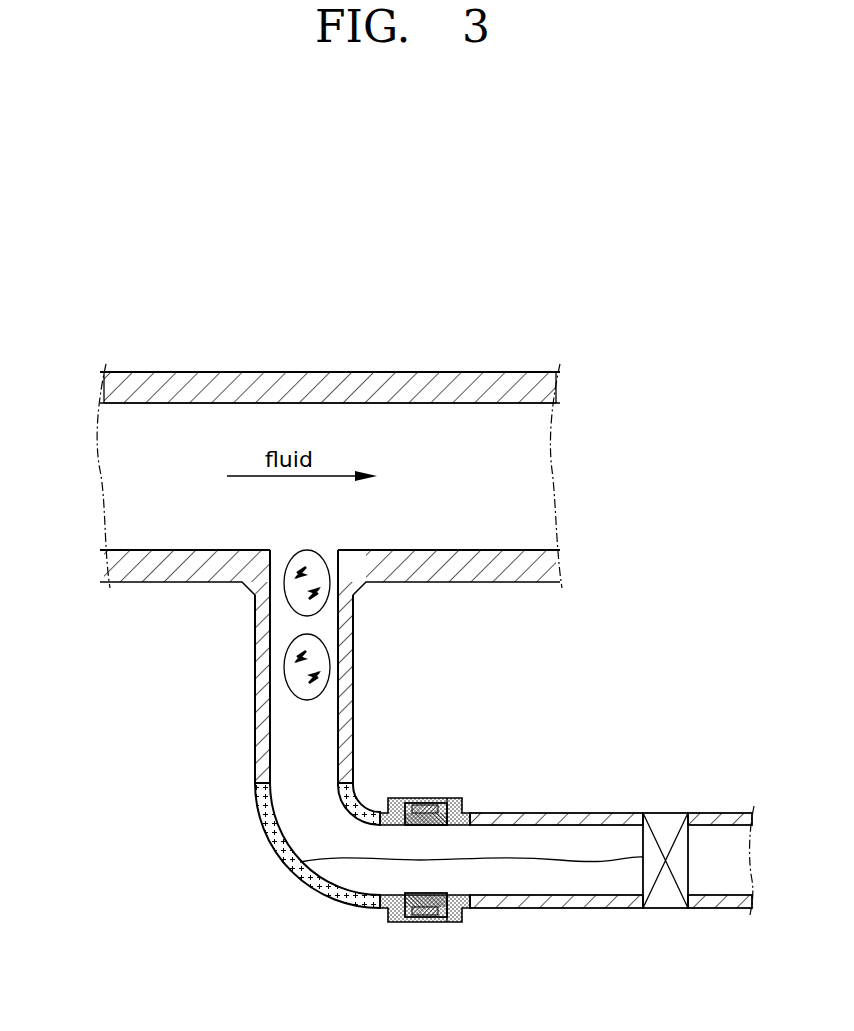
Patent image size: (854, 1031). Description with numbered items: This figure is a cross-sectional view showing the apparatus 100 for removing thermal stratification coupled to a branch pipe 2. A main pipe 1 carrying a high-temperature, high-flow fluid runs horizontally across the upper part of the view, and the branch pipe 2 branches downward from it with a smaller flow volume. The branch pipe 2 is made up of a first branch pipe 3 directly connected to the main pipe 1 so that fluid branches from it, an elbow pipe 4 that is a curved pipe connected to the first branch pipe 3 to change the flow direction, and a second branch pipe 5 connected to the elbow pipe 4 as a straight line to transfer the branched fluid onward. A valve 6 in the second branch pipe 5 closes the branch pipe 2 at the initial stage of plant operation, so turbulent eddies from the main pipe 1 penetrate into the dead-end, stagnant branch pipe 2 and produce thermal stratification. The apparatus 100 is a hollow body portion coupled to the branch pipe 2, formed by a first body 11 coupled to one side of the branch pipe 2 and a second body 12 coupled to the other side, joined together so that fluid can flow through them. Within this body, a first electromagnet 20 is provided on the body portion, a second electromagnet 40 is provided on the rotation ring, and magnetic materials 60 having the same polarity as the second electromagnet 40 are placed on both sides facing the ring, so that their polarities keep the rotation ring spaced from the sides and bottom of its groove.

The main pipe 1 is at (242, 385).
The branch pipe 2 is at (186, 732).
The first branch pipe 3 is at (263, 728).
The elbow pipe 4 is at (260, 818).
The second branch pipe 5 is at (522, 905).
The valve 6 is at (665, 896).
The apparatus for removing thermal stratification 100 is at (464, 774).
The first body 11 is at (400, 798).
The second body 12 is at (460, 806).
The first electromagnet 20 is at (426, 920).
The second electromagnet 40 is at (427, 805).
The magnetic material 60 is at (470, 812).